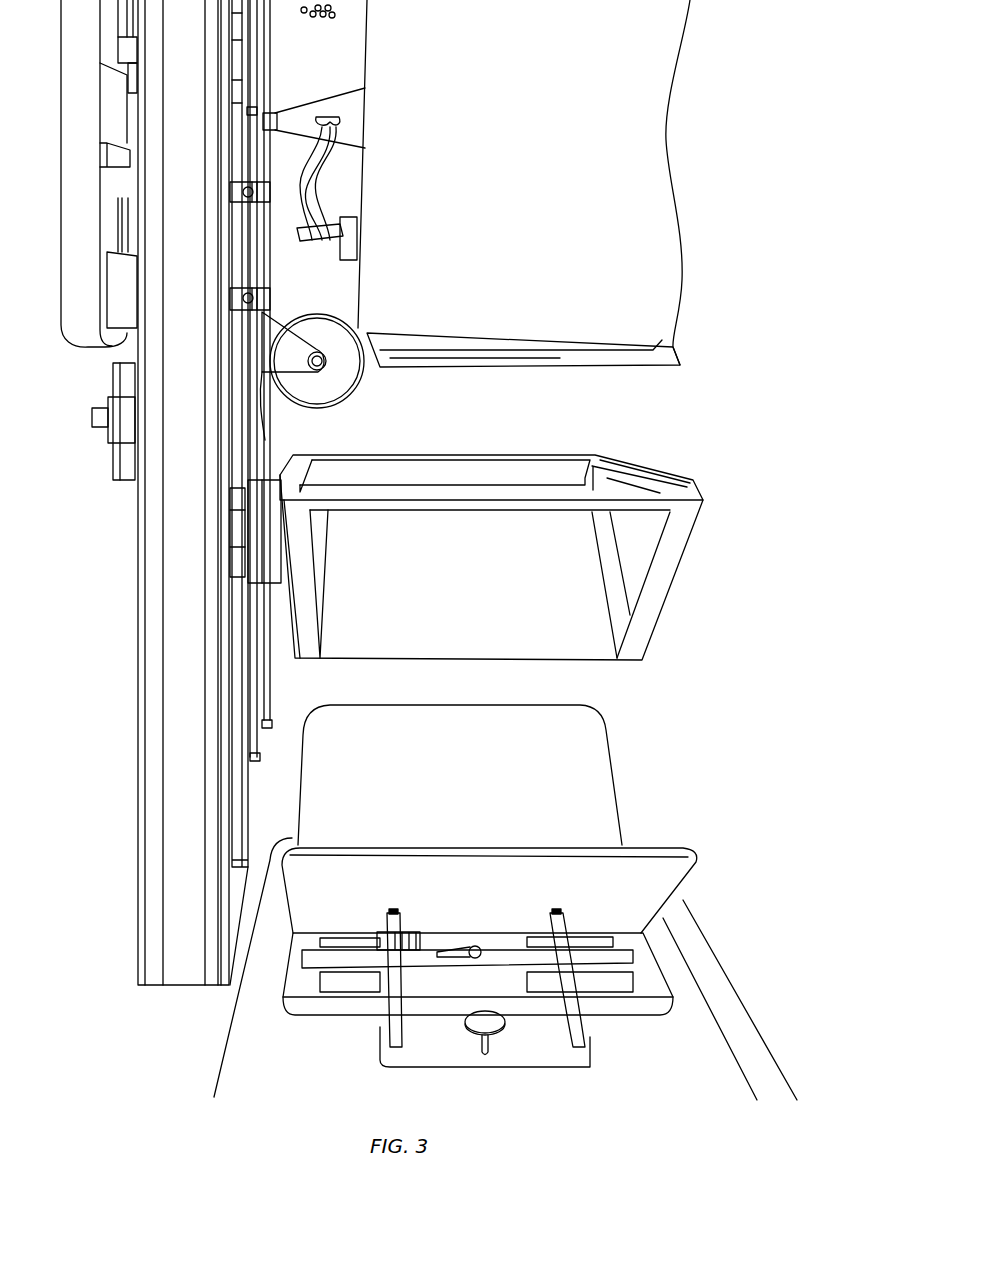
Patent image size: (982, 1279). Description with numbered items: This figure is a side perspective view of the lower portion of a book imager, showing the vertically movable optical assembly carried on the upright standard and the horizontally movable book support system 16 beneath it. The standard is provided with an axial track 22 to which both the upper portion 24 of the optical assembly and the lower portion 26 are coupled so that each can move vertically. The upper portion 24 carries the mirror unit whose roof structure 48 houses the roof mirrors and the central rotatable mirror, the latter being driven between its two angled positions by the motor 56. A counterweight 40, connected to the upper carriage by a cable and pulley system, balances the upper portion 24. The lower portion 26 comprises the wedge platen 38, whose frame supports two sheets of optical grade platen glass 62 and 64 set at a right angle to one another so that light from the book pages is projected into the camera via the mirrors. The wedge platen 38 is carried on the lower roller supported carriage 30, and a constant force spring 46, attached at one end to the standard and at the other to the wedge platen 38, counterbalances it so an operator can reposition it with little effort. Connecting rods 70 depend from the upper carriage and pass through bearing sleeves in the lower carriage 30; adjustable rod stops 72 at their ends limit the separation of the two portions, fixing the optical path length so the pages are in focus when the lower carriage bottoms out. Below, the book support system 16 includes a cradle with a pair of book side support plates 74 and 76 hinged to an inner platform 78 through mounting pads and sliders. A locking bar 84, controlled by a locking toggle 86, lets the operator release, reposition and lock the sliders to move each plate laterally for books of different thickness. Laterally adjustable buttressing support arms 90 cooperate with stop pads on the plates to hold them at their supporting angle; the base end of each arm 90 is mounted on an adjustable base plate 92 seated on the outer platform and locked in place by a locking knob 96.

The horizontally movable book support system 16 is at (505, 917).
The axial track 22 is at (243, 820).
The upper portion of the optical assembly 24 is at (514, 183).
The lower portion of the optical assembly 26 is at (533, 534).
The lower roller supported carriage 30 is at (273, 540).
The wedge platen 38 is at (533, 505).
The counterweight 40 is at (78, 142).
The constant force spring 46 is at (328, 387).
The roof structure 48 is at (640, 62).
The motor 56 is at (352, 243).
The platen glass 62 is at (573, 613).
The platen glass 64 is at (482, 483).
The connecting rods 70 is at (257, 683).
The adjustable rod stops 72 is at (258, 757).
The book side support plate 74 is at (643, 870).
The book side support plate 76 is at (572, 770).
The inner platform 78 is at (650, 987).
The locking bar 84 is at (335, 953).
The locking toggle 86 is at (460, 947).
The buttressing support arms 90 is at (395, 1000).
The adjustable base plate 92 is at (570, 1053).
The locking knob 96 is at (492, 1022).